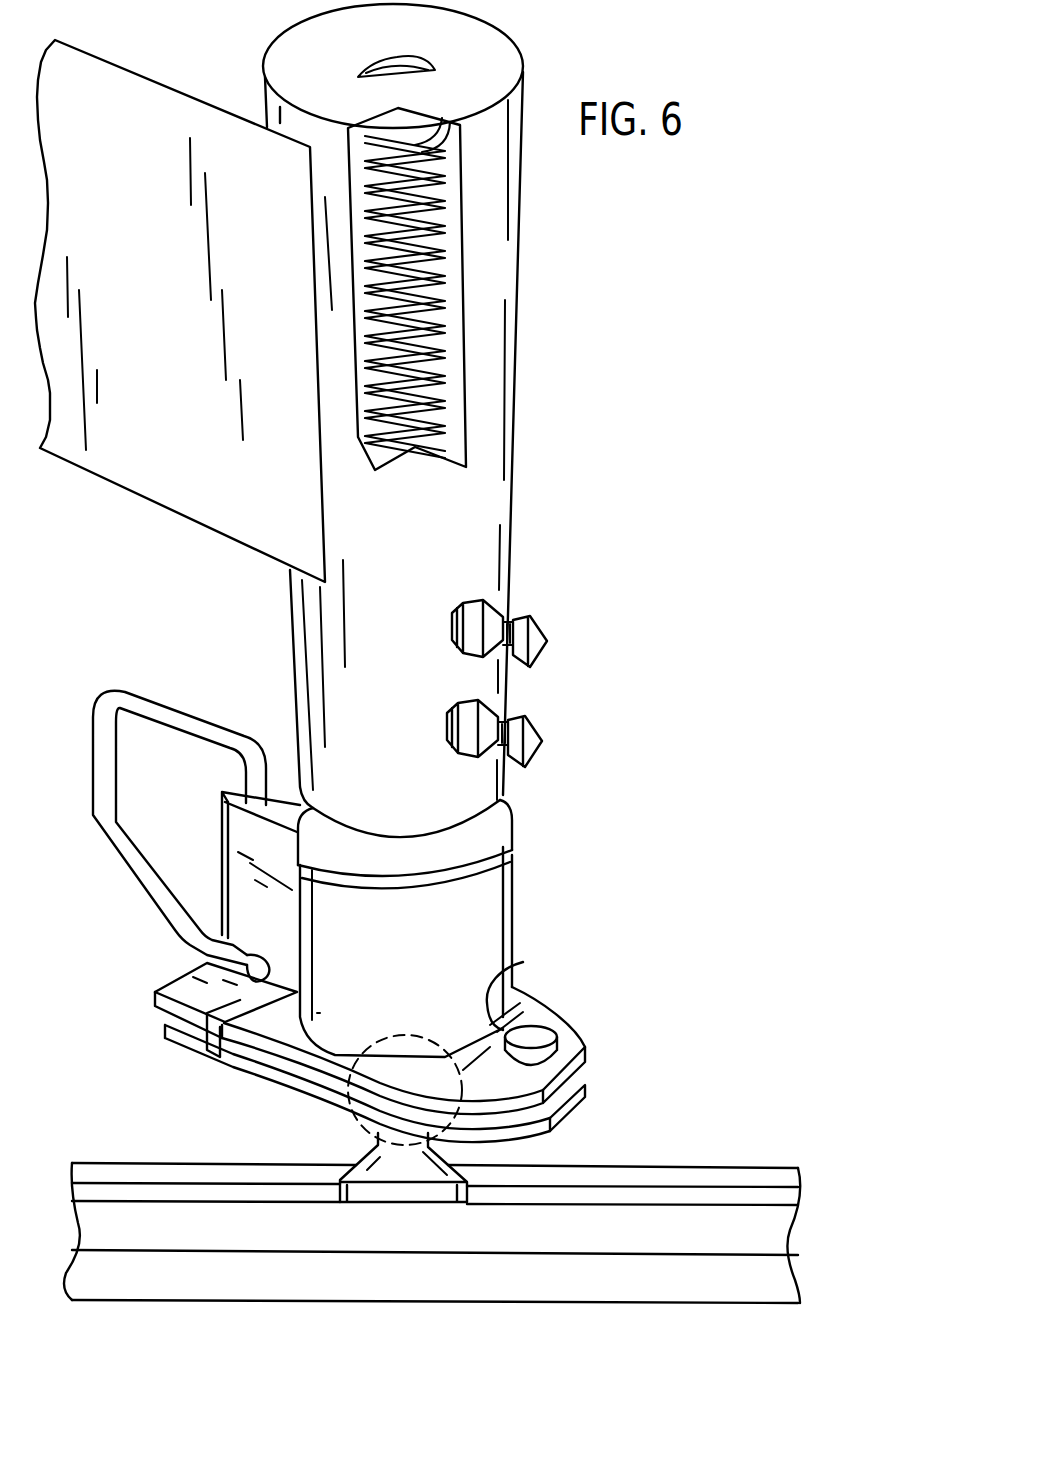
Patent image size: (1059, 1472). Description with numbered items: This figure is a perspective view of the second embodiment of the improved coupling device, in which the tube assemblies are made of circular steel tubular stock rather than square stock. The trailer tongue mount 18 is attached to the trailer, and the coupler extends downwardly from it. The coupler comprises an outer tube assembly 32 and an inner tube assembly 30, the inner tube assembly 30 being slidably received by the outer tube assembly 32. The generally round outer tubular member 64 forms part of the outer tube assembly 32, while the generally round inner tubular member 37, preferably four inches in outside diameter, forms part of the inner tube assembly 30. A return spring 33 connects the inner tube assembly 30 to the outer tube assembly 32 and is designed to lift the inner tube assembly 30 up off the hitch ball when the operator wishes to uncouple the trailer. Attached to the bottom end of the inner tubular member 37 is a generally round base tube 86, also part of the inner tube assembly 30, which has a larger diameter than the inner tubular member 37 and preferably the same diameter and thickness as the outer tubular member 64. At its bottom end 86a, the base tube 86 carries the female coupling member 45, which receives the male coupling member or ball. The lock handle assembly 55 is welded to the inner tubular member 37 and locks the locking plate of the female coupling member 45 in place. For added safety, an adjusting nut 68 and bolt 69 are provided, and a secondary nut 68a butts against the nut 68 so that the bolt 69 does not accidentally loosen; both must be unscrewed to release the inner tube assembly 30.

The trailer tongue mount 18 is at (126, 223).
The outer tube assembly 32 is at (435, 406).
The return spring 33 is at (440, 215).
The outer tubular member 64 is at (435, 548).
The adjusting nut 68 is at (526, 601).
The secondary nut 68a is at (503, 606).
The bolt 69 is at (530, 747).
The inner tubular member 37 is at (477, 822).
The inner tube assembly 30 is at (422, 961).
The base tube 86 is at (460, 958).
The bottom end of the base tube 86a is at (523, 962).
The female coupling member 45 is at (583, 1034).
The lock handle assembly 55 is at (90, 759).